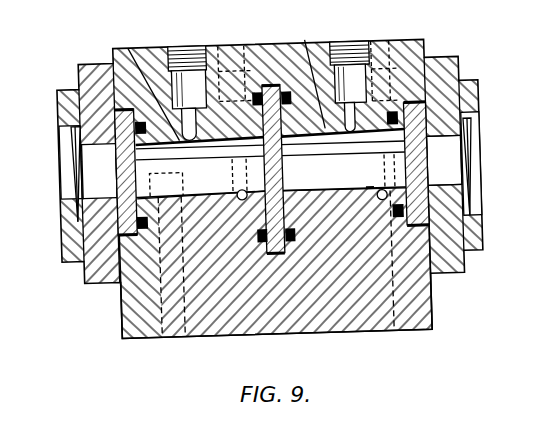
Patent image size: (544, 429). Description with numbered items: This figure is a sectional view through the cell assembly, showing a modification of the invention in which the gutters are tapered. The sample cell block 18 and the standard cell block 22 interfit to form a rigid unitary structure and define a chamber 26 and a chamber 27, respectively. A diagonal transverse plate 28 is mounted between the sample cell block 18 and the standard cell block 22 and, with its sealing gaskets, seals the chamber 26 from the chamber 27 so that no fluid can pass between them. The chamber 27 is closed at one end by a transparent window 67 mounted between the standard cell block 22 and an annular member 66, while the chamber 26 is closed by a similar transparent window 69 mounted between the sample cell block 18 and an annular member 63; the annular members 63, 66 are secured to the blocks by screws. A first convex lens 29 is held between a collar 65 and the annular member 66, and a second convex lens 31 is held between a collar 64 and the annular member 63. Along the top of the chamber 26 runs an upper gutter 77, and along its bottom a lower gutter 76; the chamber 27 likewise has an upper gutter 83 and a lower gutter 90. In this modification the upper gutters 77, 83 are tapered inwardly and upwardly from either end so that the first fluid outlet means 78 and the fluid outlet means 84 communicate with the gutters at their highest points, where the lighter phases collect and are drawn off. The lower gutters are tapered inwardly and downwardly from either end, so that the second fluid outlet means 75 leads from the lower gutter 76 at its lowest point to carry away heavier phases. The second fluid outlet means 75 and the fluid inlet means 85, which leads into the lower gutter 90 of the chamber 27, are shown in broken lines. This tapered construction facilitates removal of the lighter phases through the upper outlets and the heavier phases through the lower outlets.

The sample cell block 18 is at (379, 323).
The standard cell block 22 is at (200, 328).
The chamber 26 is at (378, 185).
The chamber 27 is at (213, 193).
The diagonal transverse plate 28 is at (290, 172).
The first convex lens 29 is at (70, 172).
The second convex lens 31 is at (473, 165).
The annular member 63 is at (455, 273).
The collar 64 is at (482, 242).
The collar 65 is at (64, 250).
The annular member 66 is at (102, 279).
The transparent window 67 is at (117, 180).
The transparent window 69 is at (420, 172).
The second fluid outlet means 75 is at (393, 40).
The lower gutter 76 is at (344, 202).
The upper gutter 77 is at (301, 42).
The first fluid outlet means 78 is at (355, 38).
The upper gutter 83 is at (128, 47).
The fluid outlet means 84 is at (182, 46).
The fluid inlet means 85 is at (242, 45).
The lower gutter 90 is at (208, 203).